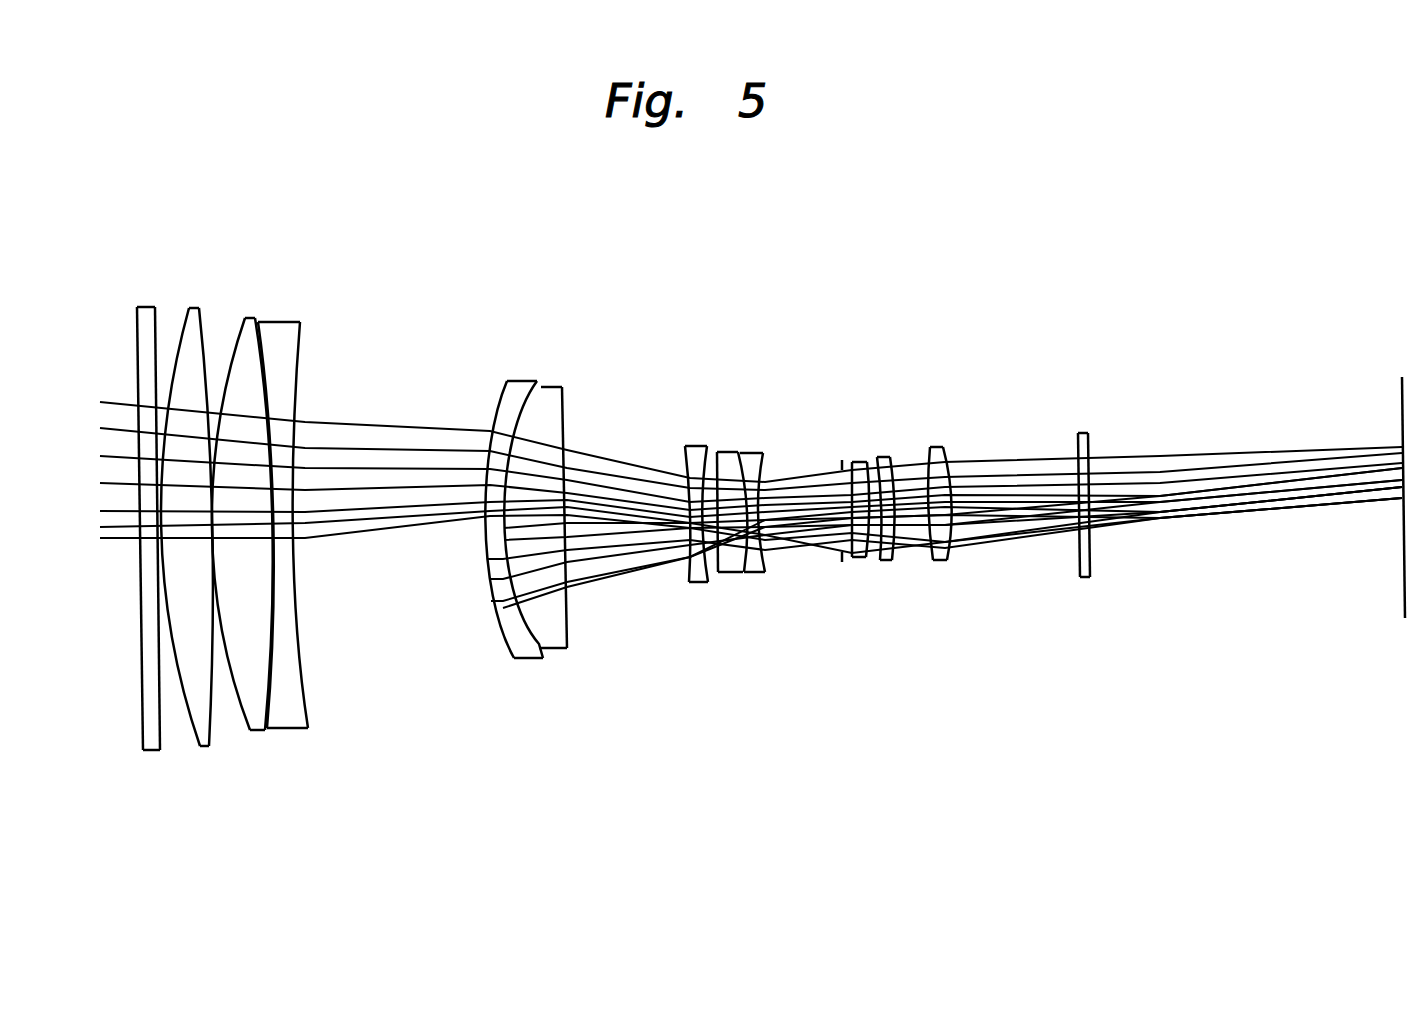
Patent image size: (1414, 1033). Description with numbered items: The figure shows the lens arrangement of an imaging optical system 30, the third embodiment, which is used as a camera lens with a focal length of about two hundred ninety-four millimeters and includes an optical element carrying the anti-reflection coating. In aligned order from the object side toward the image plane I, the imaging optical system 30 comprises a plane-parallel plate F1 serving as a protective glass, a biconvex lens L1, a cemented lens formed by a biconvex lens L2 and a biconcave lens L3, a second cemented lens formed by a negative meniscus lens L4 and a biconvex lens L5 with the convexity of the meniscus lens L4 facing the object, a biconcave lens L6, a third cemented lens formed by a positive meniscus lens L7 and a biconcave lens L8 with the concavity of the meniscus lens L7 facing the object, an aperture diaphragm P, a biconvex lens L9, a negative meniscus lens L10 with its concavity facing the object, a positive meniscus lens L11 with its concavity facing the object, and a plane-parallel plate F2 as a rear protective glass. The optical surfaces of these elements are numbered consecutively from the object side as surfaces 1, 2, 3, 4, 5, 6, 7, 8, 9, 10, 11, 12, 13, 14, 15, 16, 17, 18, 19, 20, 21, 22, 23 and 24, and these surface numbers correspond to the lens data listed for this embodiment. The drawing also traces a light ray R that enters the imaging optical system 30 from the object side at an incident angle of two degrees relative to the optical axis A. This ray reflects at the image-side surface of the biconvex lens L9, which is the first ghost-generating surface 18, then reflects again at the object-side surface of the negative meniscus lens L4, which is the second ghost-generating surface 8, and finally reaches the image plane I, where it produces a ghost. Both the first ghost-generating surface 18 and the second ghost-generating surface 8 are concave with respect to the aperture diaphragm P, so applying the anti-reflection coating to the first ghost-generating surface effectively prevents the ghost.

The surface number 1 is at (143, 740).
The surface number 2 is at (162, 740).
The surface number 3 is at (195, 742).
The surface number 4 is at (210, 735).
The surface number 5 is at (250, 730).
The surface number 6 is at (260, 717).
The surface number 7 is at (310, 713).
The second ghost-generating surface 8 is at (507, 648).
The surface number 9 is at (537, 644).
The surface number 10 is at (568, 631).
The surface number 11 is at (688, 573).
The surface number 12 is at (707, 577).
The surface number 13 is at (718, 570).
The surface number 14 is at (738, 570).
The surface number 15 is at (767, 570).
The surface number 16 is at (841, 460).
The surface number 17 is at (852, 560).
The first ghost-generating surface 18 is at (866, 557).
The surface number 19 is at (893, 552).
The surface number 20 is at (902, 553).
The surface number 21 is at (932, 560).
The surface number 22 is at (955, 560).
The surface number 23 is at (1078, 560).
The surface number 24 is at (1090, 560).
The imaging optical system 30 is at (1030, 233).
The plane-parallel plate F1 is at (144, 307).
The plane-parallel plate F2 is at (1082, 433).
The biconvex lens L1 is at (193, 308).
The biconvex lens L2 is at (251, 317).
The biconcave lens L3 is at (282, 323).
The negative meniscus lens L4 is at (519, 381).
The biconvex lens L5 is at (555, 388).
The biconcave lens L6 is at (695, 446).
The positive meniscus lens L7 is at (728, 452).
The biconcave lens L8 is at (752, 453).
The biconvex lens L9 is at (855, 462).
The negative meniscus lens L10 is at (887, 457).
The positive meniscus lens L11 is at (938, 447).
The aperture diaphragm P is at (822, 537).
The light ray R is at (98, 395).
The optical axis A is at (95, 535).
The image plane I is at (1402, 375).